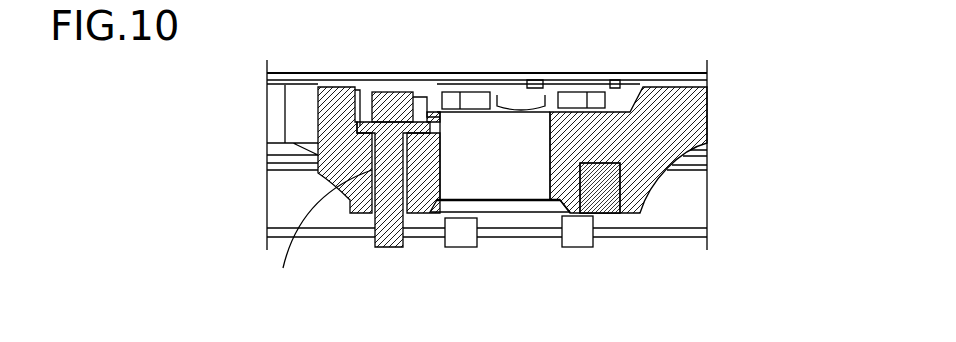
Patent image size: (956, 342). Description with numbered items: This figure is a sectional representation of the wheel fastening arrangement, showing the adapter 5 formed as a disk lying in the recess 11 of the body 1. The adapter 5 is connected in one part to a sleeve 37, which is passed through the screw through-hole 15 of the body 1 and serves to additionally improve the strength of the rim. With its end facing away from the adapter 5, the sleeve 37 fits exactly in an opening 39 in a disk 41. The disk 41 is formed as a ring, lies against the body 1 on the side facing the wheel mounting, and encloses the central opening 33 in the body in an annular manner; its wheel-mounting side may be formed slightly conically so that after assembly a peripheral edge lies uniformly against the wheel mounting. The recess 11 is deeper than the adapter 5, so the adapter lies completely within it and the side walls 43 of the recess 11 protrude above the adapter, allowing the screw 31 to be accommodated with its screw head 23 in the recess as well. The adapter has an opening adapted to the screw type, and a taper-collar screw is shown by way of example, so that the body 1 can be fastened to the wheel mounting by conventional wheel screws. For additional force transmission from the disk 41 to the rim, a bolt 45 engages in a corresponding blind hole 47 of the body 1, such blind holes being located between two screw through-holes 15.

The body 1 is at (683, 102).
The adapter 5 is at (353, 131).
The recess 11 is at (352, 105).
The screw through-hole 15 is at (470, 198).
The screw head 23 is at (397, 95).
The screw 31 is at (283, 268).
The central opening 33 is at (527, 157).
The sleeve 37 is at (413, 215).
The opening 39 is at (420, 213).
The disk 41 is at (388, 176).
The side walls 43 is at (422, 117).
The bolt 45 is at (677, 177).
The blind hole 47 is at (603, 165).